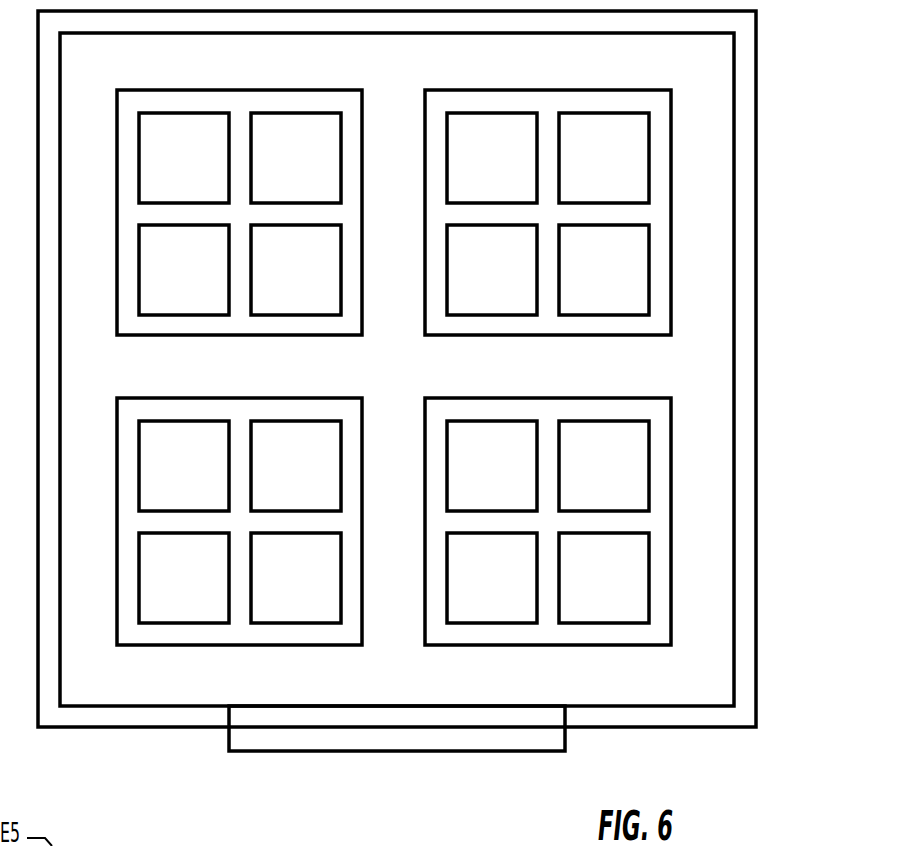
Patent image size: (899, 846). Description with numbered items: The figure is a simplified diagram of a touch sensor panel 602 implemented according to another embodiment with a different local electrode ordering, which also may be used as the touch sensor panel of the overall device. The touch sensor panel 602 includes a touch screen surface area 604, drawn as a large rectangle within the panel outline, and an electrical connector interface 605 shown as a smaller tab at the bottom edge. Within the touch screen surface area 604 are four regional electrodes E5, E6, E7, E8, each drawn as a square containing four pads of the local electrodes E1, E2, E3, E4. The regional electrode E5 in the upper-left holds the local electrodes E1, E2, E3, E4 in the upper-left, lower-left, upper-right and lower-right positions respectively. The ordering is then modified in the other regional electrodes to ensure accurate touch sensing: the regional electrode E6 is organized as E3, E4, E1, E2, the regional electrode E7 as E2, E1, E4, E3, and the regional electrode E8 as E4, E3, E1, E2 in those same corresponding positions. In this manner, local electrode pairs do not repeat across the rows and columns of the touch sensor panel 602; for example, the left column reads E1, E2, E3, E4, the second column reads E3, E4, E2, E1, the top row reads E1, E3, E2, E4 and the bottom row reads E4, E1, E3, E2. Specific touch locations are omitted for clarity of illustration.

The touch sensor panel 602 is at (440, 369).
The touch screen surface area 604 is at (451, 369).
The electrical connector interface 605 is at (415, 742).
The regional electrode E5 is at (230, 191).
The regional electrode E6 is at (227, 501).
The regional electrode E7 is at (536, 192).
The regional electrode E8 is at (537, 501).
The local electrode E1 is at (173, 176).
The local electrode E2 is at (173, 288).
The local electrode E3 is at (285, 176).
The local electrode E4 is at (285, 288).